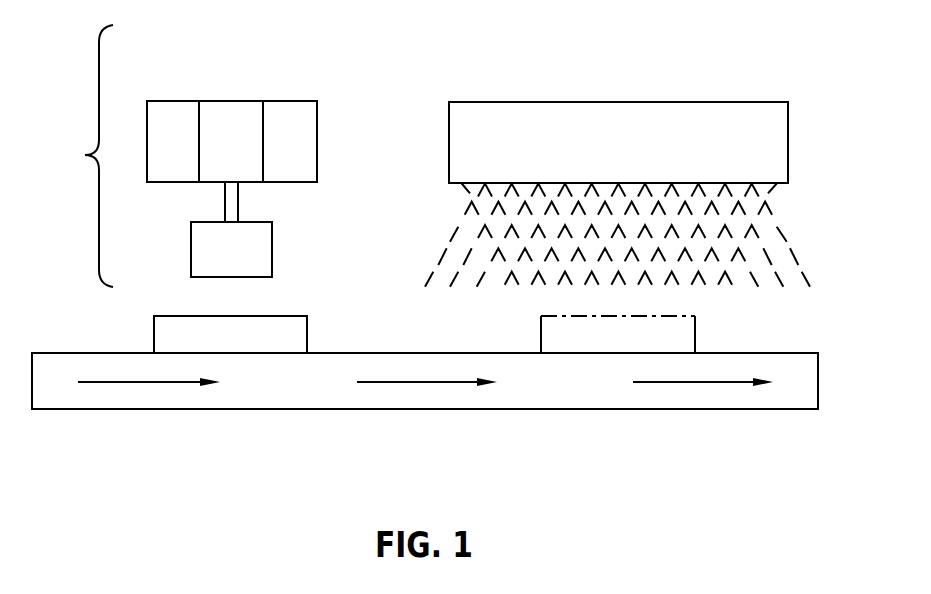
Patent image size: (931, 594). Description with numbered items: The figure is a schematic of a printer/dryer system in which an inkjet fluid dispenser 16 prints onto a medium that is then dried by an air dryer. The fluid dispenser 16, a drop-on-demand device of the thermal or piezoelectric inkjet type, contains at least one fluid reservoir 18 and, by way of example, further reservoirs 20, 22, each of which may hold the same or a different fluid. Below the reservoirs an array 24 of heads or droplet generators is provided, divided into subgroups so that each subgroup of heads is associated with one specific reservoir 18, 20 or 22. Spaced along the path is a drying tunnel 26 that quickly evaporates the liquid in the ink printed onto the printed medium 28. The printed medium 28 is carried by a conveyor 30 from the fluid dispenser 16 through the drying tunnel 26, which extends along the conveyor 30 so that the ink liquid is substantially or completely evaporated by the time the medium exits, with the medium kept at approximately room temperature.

The fluid dispenser 16 is at (85, 156).
The fluid reservoir 18 is at (173, 132).
The reservoir 20 is at (233, 130).
The reservoir 22 is at (287, 123).
The array 24 is at (212, 250).
The drying tunnel 26 is at (610, 148).
The printed medium 28 is at (172, 333).
The conveyor 30 is at (273, 392).